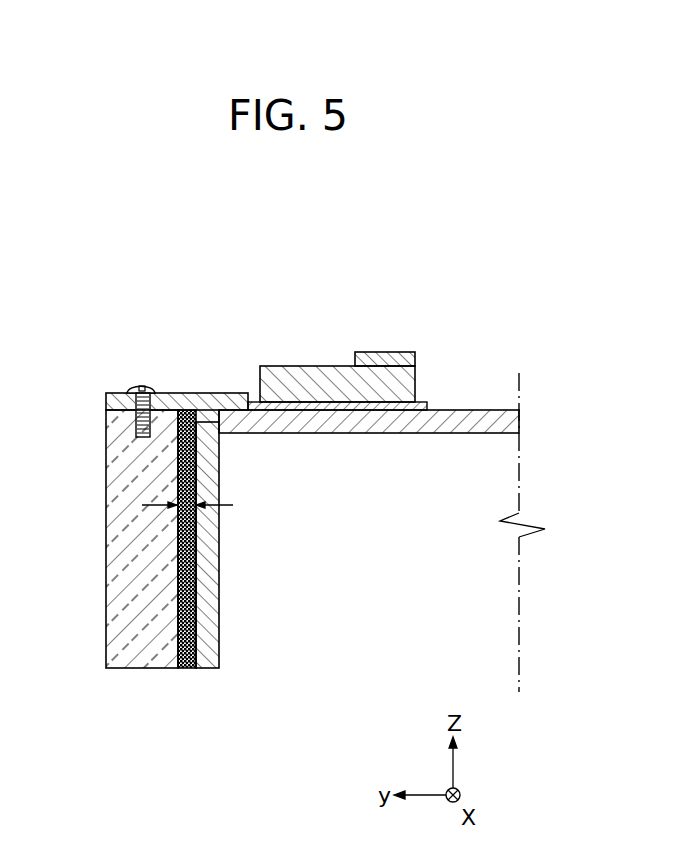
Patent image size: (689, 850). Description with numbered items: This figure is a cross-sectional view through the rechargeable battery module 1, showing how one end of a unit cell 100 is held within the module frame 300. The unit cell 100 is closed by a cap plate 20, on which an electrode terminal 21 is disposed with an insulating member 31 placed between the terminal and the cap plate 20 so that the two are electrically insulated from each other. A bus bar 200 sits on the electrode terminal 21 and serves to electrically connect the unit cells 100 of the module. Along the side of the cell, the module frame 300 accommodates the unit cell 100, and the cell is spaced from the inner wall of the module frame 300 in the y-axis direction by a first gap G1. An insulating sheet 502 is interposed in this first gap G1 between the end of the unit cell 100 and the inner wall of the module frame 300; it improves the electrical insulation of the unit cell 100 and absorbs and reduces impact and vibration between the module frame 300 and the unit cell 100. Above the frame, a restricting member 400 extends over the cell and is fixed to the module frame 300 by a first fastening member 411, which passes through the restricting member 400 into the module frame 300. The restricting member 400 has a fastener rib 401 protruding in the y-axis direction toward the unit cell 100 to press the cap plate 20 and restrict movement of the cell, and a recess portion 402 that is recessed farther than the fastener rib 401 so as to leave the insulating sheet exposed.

The rechargeable battery module 1 is at (503, 326).
The cap plate 20 is at (482, 422).
The electrode terminal 21 is at (300, 385).
The insulating member 31 is at (401, 406).
The unit cell 100 is at (500, 500).
The bus bar 200 is at (375, 360).
The module frame 300 is at (118, 540).
The restricting member 400 is at (106, 397).
The fastener rib 401 is at (222, 398).
The recess portion 402 is at (186, 398).
The first fastening member 411 is at (137, 382).
The insulating sheet 502 is at (186, 606).
The first gap G1 is at (201, 505).